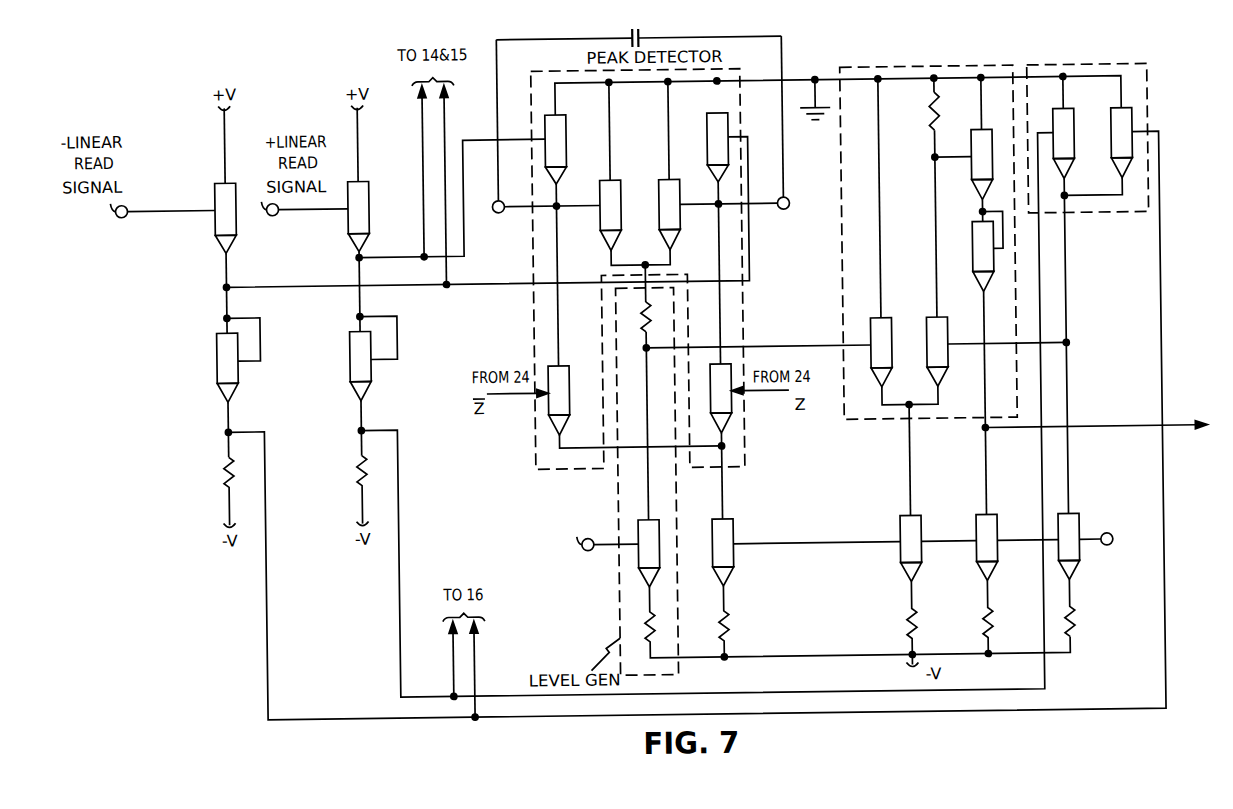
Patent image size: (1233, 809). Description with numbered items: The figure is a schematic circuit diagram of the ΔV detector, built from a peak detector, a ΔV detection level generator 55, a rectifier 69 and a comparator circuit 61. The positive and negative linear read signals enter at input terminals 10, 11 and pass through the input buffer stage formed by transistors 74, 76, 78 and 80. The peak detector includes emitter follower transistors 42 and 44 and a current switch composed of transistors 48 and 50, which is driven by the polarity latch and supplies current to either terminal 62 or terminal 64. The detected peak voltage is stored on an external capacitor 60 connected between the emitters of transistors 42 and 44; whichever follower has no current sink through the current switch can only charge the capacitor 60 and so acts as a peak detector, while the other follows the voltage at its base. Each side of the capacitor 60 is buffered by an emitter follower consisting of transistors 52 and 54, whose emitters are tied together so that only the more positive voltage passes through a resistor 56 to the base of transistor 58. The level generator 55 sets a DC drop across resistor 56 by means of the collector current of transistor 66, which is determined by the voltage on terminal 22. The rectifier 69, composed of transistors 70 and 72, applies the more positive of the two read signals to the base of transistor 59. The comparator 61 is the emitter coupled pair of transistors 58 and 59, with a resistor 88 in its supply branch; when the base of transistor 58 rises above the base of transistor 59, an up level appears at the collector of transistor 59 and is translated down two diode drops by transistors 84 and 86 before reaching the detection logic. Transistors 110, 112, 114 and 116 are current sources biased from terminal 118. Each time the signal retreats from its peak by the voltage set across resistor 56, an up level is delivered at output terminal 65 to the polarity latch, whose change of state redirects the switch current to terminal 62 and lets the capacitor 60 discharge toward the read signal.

The +linear read signal input 10 is at (280, 213).
The -linear read signal input 11 is at (121, 212).
The terminal 22 is at (587, 532).
The transistor 42 is at (570, 154).
The transistor 44 is at (710, 150).
The transistor 48 is at (570, 398).
The transistor 50 is at (710, 398).
The transistor 52 is at (624, 199).
The transistor 54 is at (662, 183).
The ΔV detection level generator 55 is at (676, 678).
The resistor 56 is at (647, 324).
The transistor 58 is at (892, 364).
The transistor 59 is at (928, 333).
The external capacitor 60 is at (643, 34).
The comparator circuit 61 is at (988, 68).
The terminal 62 is at (494, 212).
The terminal 64 is at (792, 208).
The output terminal 65 is at (1195, 428).
The transistor 66 is at (658, 530).
The rectifier 69 is at (1148, 69).
The transistor 70 is at (1114, 156).
The transistor 72 is at (1083, 133).
The transistor 74 is at (372, 214).
The transistor 76 is at (350, 347).
The transistor 78 is at (238, 196).
The transistor 80 is at (218, 345).
The transistor 84 is at (996, 148).
The transistor 86 is at (974, 260).
The resistor 88 is at (934, 120).
The transistor 110 is at (732, 532).
The transistor 112 is at (926, 527).
The transistor 114 is at (1002, 527).
The transistor 116 is at (1078, 533).
The terminal 118 is at (1108, 551).